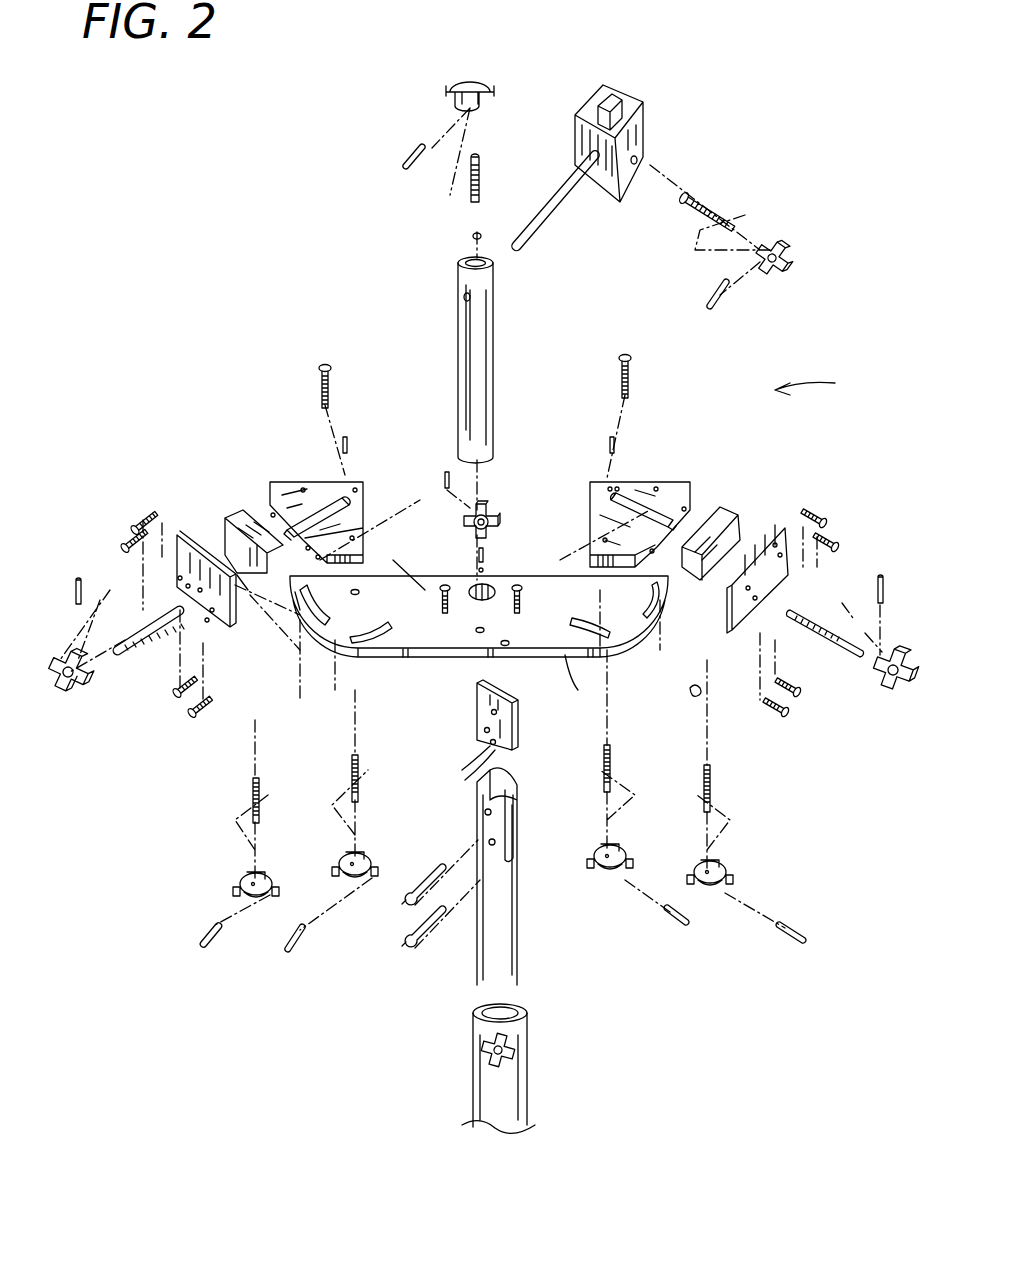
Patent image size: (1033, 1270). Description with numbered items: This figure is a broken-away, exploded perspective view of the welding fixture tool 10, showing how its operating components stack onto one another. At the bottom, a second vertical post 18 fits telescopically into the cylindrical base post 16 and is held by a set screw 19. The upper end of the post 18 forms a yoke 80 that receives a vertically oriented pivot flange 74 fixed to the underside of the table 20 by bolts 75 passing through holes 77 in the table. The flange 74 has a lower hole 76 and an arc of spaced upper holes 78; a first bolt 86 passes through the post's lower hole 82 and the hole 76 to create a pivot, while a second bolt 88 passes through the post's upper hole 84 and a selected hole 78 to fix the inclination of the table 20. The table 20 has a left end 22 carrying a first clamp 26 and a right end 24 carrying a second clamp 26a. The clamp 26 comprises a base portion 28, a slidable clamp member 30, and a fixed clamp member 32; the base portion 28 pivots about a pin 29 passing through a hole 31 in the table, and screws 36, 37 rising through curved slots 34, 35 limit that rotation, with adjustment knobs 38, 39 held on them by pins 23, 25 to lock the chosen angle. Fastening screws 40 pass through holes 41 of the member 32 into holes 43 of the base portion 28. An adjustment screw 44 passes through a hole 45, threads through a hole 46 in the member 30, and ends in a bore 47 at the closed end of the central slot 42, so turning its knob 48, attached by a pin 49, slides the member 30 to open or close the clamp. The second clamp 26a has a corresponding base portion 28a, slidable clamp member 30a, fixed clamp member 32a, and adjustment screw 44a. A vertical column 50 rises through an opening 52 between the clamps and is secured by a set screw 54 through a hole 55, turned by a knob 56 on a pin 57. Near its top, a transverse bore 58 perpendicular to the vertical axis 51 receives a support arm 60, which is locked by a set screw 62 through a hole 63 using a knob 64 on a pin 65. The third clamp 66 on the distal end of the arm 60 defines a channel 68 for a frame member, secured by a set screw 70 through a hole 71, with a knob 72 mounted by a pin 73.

The tool 10 is at (815, 384).
The base post 16 is at (518, 1100).
The second vertical post 18 is at (515, 960).
The set screw 19 is at (512, 1050).
The table 20 is at (520, 655).
The left end 22 is at (395, 560).
The pin 23 is at (208, 945).
The right end 24 is at (575, 684).
The pin 25 is at (292, 950).
The first clamp 26 is at (216, 470).
The second clamp 26a is at (745, 488).
The base portion 28 is at (285, 472).
The base portion 28a is at (665, 487).
The pin 29 is at (330, 385).
The slidable clamp member 30 is at (250, 520).
The slidable clamp member 30a is at (735, 525).
The hole 31 is at (355, 595).
The fixed clamp member 32 is at (180, 535).
The fixed clamp member 32a is at (735, 625).
The curved slot 34 is at (290, 612).
The curved slot 35 is at (370, 640).
The screw 36 is at (250, 795).
The screw 37 is at (360, 775).
The adjustment knob 38 is at (252, 905).
The adjustment knob 39 is at (358, 885).
The fastening screws 40 is at (155, 728).
The holes 41 is at (205, 650).
The central slot 42 is at (352, 508).
The holes 43 is at (314, 580).
The adjustment screw 44 is at (138, 645).
The adjustment screw 44a is at (830, 635).
The hole 45 is at (205, 622).
The hole 46 is at (256, 598).
The bore 47 is at (348, 455).
The adjustment knob 48 is at (72, 692).
The pin 49 is at (74, 598).
The vertical column 50 is at (488, 380).
The vertical axis 51 is at (470, 240).
The opening 52 is at (486, 584).
The set screw 54 is at (476, 560).
The hole 55 is at (483, 566).
The adjustment knob 56 is at (495, 505).
The pin 57 is at (440, 470).
The transverse bore 58 is at (463, 300).
The support arm 60 is at (540, 230).
The set screw 62 is at (480, 185).
The hole 63 is at (485, 262).
The adjustment knob 64 is at (495, 80).
The pin 65 is at (398, 150).
The third clamp 66 is at (640, 120).
The channel 68 is at (618, 96).
The set screw 70 is at (700, 198).
The hole 71 is at (637, 172).
The adjustment knob 72 is at (785, 270).
The pin 73 is at (718, 305).
The pivot flange 74 is at (512, 740).
The bolts 75 is at (545, 600).
The lower hole 76 is at (457, 768).
The holes 77 is at (508, 638).
The upper holes 78 is at (490, 712).
The yoke 80 is at (513, 815).
The lower hole 82 is at (494, 845).
The upper hole 84 is at (491, 812).
The first bolt 86 is at (422, 940).
The second bolt 88 is at (412, 888).